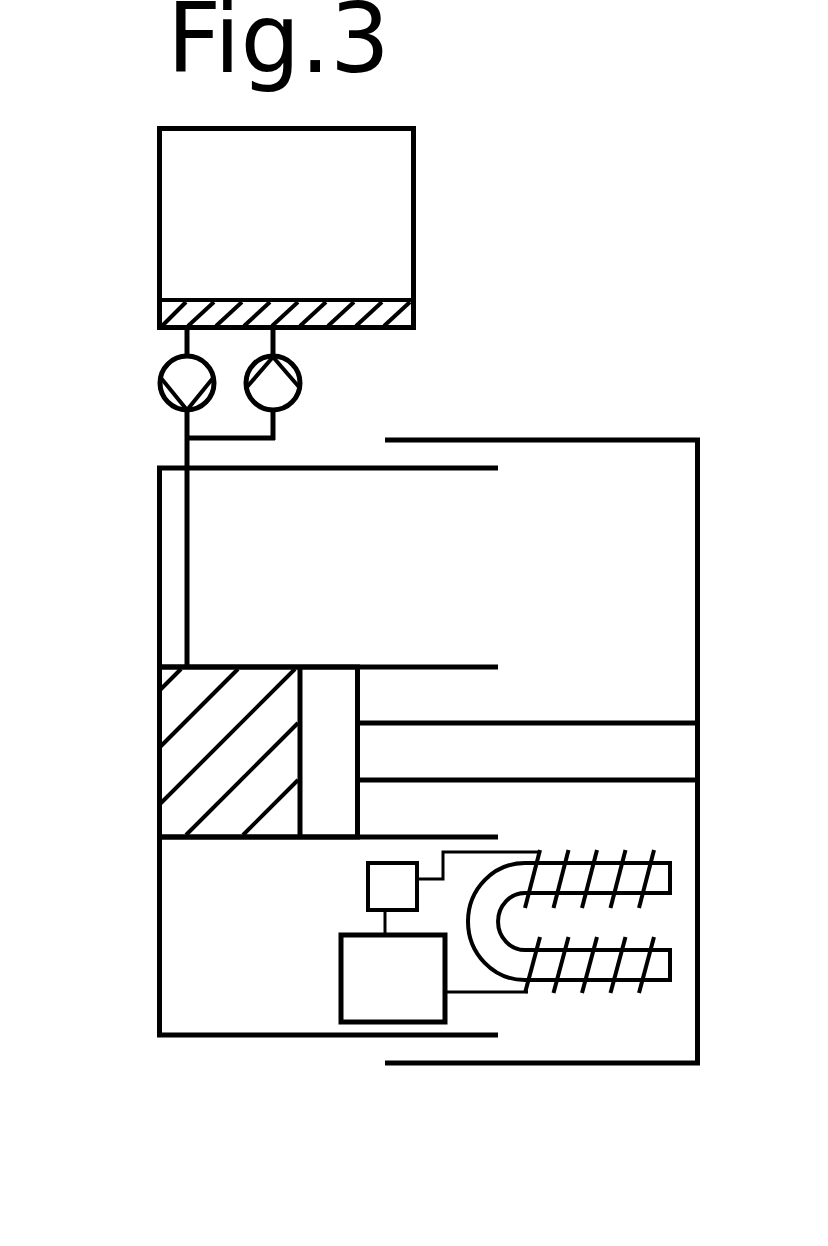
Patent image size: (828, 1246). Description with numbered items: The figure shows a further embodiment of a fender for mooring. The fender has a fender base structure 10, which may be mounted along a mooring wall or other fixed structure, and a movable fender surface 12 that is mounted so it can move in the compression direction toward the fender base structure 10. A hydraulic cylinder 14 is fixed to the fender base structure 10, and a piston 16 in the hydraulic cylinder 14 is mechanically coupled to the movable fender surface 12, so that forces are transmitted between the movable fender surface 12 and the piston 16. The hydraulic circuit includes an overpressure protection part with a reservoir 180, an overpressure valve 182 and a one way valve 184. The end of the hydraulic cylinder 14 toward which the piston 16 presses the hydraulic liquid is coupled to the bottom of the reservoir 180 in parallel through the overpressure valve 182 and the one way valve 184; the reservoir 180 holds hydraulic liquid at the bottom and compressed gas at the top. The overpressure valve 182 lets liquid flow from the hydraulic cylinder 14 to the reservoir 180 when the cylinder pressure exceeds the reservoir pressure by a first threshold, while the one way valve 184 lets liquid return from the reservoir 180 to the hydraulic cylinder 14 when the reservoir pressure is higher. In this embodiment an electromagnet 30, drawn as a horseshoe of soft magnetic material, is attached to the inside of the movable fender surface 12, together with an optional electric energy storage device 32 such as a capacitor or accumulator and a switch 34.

The fender base structure 10 is at (243, 1038).
The movable fender surface 12 is at (638, 440).
The hydraulic cylinder 14 is at (218, 840).
The piston 16 is at (581, 722).
The electromagnet 30 is at (627, 982).
The electric energy storage device 32 is at (338, 995).
The switch 34 is at (366, 893).
The reservoir 180 is at (416, 212).
The overpressure valve 182 is at (302, 382).
The one way valve 184 is at (159, 386).